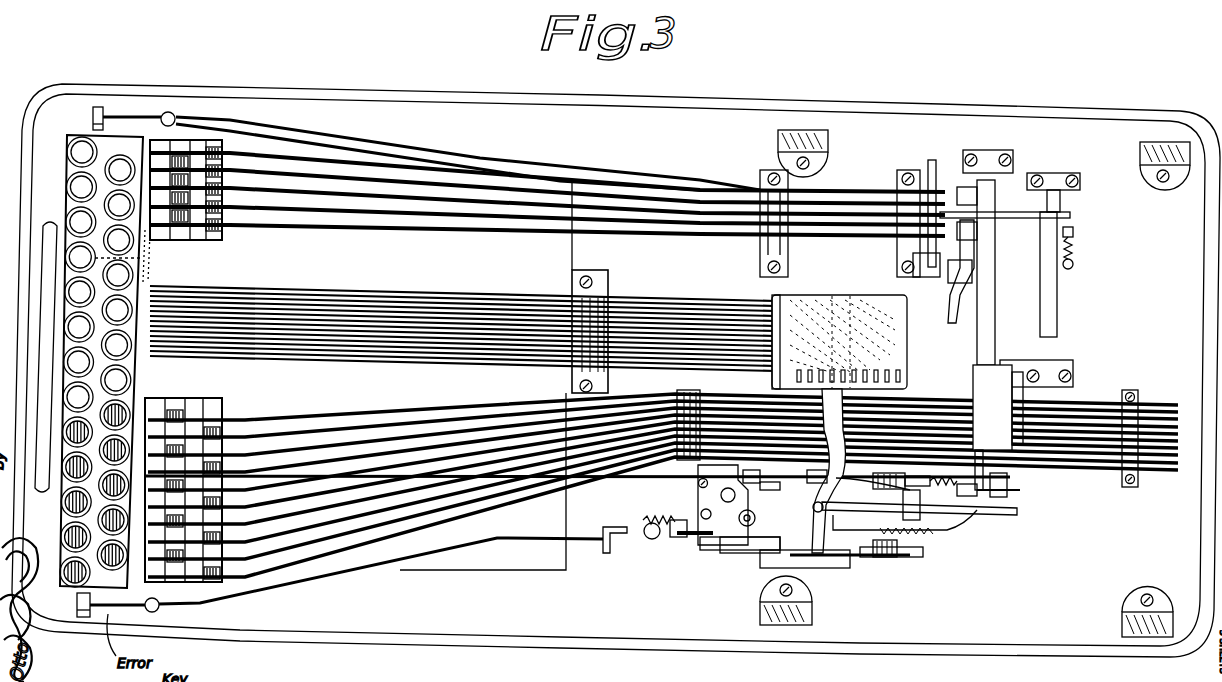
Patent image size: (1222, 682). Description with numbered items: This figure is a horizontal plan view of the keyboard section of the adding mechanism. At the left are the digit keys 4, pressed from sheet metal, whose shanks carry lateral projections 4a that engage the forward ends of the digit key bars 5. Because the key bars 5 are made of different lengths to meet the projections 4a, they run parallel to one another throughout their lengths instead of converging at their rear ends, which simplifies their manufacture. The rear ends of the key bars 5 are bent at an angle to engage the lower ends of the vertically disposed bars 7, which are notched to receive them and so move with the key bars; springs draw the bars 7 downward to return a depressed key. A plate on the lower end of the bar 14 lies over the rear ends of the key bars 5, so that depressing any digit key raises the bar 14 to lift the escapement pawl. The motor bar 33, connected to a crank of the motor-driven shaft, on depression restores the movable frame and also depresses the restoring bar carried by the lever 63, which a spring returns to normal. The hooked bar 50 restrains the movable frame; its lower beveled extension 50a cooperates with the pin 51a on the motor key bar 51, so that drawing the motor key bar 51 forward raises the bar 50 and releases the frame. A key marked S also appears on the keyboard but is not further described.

The digit keys 4 is at (72, 252).
The lateral projections 4a is at (155, 258).
The digit key bars 5 is at (338, 314).
The vertically disposed bars 7 is at (898, 374).
The bar 14 is at (772, 303).
The motor bar 33 is at (827, 568).
The bar 50 is at (765, 474).
The beveled extension 50a is at (779, 490).
The motor key bar 51 is at (740, 480).
The pin 51a is at (813, 509).
The lever 63 is at (893, 542).
The space key S is at (99, 106).